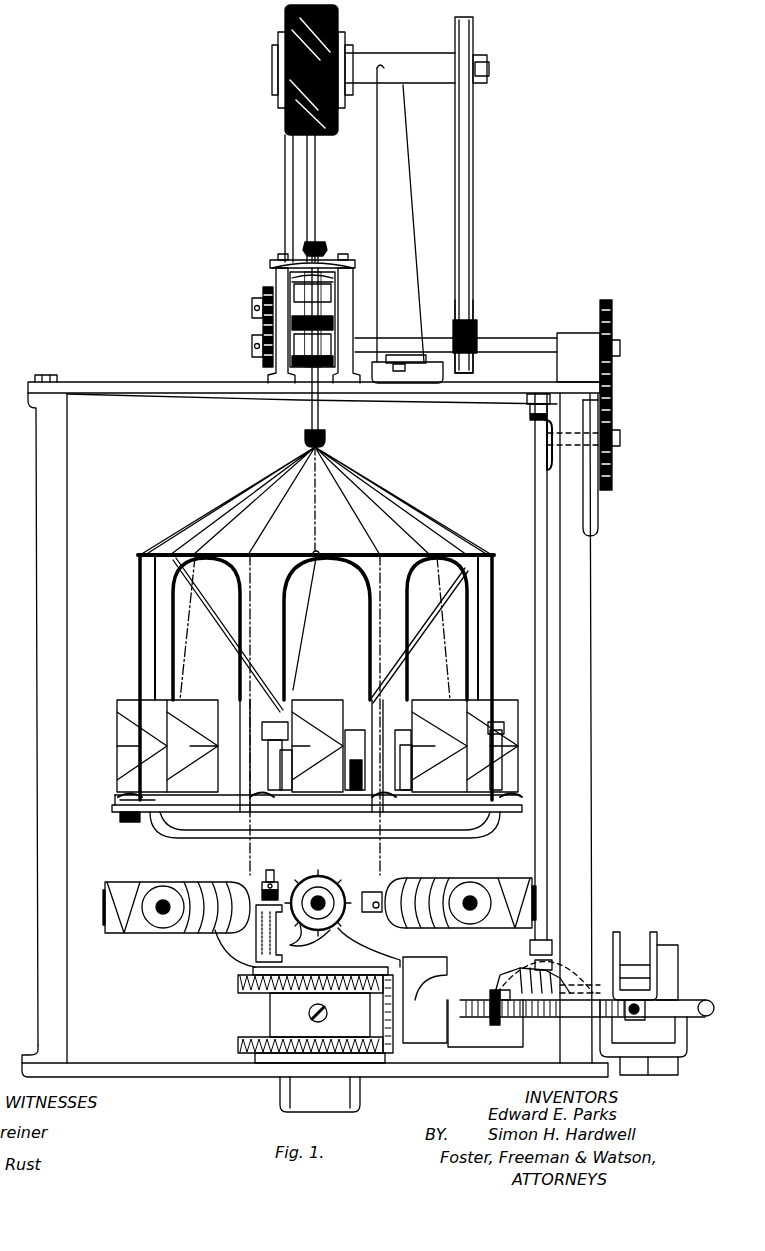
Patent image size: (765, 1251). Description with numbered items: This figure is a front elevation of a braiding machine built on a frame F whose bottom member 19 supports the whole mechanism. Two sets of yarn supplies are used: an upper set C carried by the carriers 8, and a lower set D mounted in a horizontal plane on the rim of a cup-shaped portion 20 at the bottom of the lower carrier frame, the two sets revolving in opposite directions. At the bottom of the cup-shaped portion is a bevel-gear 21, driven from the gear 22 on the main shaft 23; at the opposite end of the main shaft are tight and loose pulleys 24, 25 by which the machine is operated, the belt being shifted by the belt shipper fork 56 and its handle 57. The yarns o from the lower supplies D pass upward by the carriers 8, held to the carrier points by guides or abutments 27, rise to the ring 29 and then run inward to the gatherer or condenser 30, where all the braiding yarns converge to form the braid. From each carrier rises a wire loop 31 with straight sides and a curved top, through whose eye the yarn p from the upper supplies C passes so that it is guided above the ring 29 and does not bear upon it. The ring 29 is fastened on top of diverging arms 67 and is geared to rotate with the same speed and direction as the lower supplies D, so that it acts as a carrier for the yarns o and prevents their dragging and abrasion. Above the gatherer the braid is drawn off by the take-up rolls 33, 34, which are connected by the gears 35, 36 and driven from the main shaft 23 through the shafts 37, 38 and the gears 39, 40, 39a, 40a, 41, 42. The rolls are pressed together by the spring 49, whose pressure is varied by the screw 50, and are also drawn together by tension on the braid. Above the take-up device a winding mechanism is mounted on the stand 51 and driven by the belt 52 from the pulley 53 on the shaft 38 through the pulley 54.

The frame F is at (315, 698).
The carriers 8 is at (120, 820).
The bottom member 19 is at (207, 1068).
The cup-shaped portion 20 is at (307, 922).
The bevel-gear 21 is at (238, 985).
The gear 22 is at (370, 1012).
The main shaft 23 is at (465, 998).
The tight pulley 24 is at (628, 955).
The loose pulley 25 is at (664, 955).
The guides or abutments 27 is at (135, 830).
The ring 29 is at (320, 556).
The gatherer or condenser 30 is at (327, 447).
The wire loop 31 is at (372, 620).
The top take-up roll 33 is at (300, 313).
The bottom take-up roll 34 is at (300, 345).
The gear 35 is at (270, 284).
The gear 36 is at (268, 370).
The shaft 37 is at (537, 500).
The shaft 38 is at (530, 342).
The gear 39 is at (530, 417).
The gear 39a is at (485, 1018).
The gear 40 is at (547, 448).
The gear 40a is at (500, 992).
The gear 41 is at (612, 468).
The gear 42 is at (612, 302).
The spring 49 is at (335, 268).
The screw 50 is at (318, 244).
The stand 51 is at (407, 224).
The belt 52 is at (470, 183).
The pulley 53 is at (476, 322).
The pulley 54 is at (475, 45).
The belt shipper fork 56 is at (660, 980).
The handle 57 is at (708, 1015).
The arms 67 is at (225, 640).
The set of yarn supplies C is at (118, 723).
The set of yarn supplies D is at (176, 882).
The yarns o is at (251, 606).
The yarn p is at (302, 620).